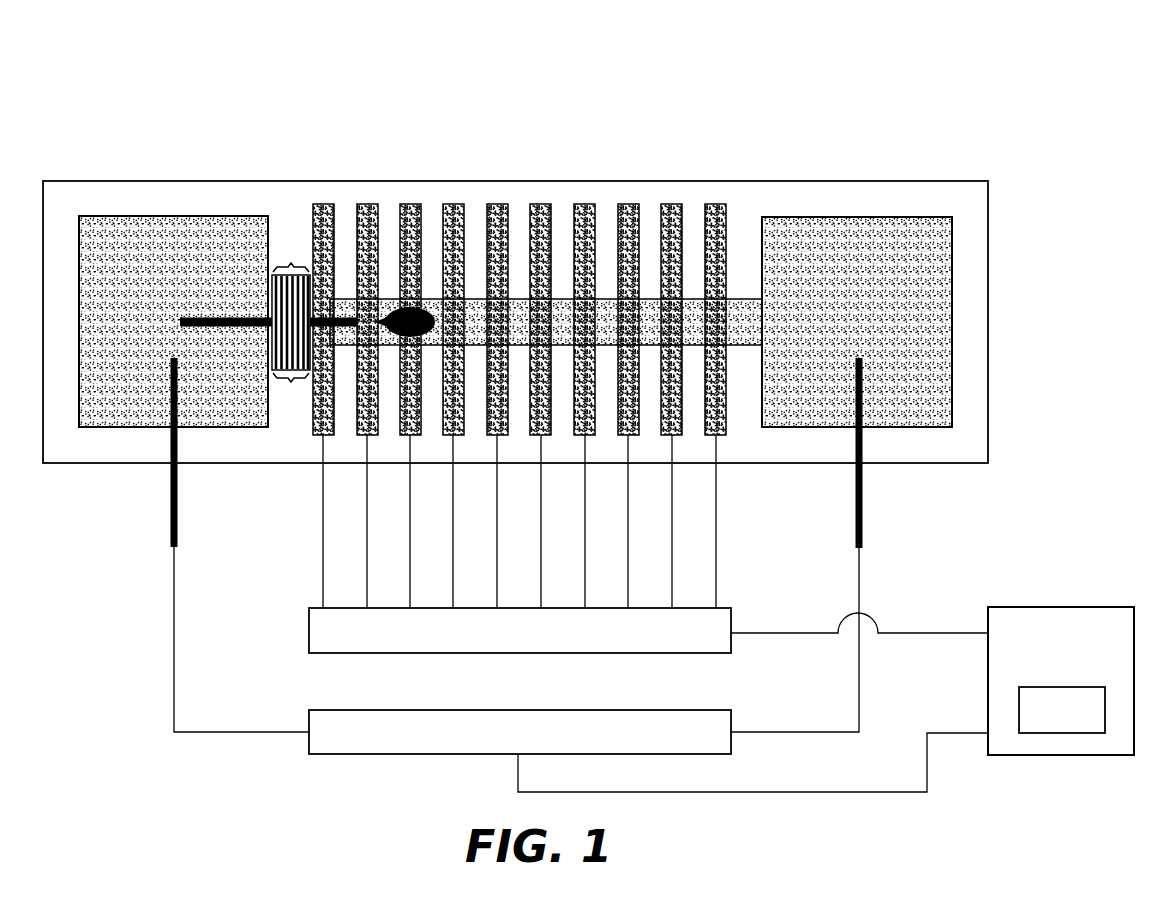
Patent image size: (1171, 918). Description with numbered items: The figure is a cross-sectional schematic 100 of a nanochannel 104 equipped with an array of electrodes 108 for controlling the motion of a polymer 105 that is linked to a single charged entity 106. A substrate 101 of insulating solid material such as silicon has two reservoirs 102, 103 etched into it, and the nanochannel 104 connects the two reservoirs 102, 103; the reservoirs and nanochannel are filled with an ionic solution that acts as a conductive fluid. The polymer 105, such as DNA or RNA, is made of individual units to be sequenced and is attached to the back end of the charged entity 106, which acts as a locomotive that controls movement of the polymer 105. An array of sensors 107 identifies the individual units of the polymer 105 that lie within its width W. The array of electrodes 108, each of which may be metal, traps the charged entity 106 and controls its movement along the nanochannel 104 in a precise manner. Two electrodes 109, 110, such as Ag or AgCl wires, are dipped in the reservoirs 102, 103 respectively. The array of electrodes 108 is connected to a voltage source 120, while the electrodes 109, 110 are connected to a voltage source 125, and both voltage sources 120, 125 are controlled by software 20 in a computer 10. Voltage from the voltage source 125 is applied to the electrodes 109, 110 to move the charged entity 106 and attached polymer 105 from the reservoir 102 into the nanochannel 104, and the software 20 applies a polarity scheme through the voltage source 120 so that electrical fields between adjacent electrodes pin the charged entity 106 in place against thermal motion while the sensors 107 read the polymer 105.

The cross-sectional schematic 100 is at (620, 78).
The substrate 101 is at (55, 190).
The reservoir 102 is at (173, 225).
The reservoir 103 is at (860, 225).
The nanochannel 104 is at (273, 190).
The polymer 105 is at (349, 330).
The charged entity 106 is at (397, 332).
The array of sensors 107 is at (291, 262).
The array of electrodes 108 is at (724, 200).
The electrode 109 is at (172, 497).
The electrode 110 is at (862, 497).
The voltage source 120 is at (540, 647).
The voltage source 125 is at (540, 744).
The computer 10 is at (1048, 676).
The software 20 is at (1048, 722).